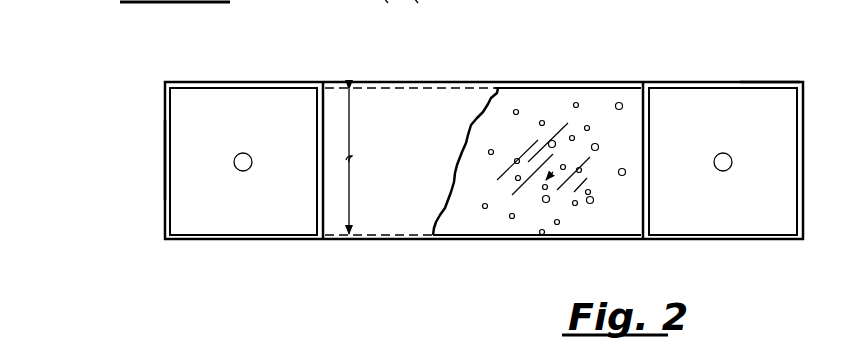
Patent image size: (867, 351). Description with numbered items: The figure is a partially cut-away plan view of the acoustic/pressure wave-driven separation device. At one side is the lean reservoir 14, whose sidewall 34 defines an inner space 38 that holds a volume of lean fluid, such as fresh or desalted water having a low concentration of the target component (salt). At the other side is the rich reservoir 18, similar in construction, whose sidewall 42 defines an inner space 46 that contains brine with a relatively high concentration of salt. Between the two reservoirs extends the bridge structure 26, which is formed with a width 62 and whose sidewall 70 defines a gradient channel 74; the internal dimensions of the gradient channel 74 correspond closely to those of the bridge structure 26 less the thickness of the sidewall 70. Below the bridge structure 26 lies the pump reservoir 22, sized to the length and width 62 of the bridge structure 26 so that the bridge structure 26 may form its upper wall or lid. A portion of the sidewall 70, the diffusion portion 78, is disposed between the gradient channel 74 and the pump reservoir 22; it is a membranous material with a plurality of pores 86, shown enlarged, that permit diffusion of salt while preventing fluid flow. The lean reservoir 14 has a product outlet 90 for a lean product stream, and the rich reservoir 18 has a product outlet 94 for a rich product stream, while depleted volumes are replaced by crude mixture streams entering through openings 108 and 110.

The lean reservoir 14 is at (805, 178).
The rich reservoir 18 is at (232, 243).
The pump reservoir 22 is at (573, 5).
The bridge structure 26 is at (385, 96).
The sidewall 34 is at (805, 126).
The inner space 38 is at (697, 98).
The sidewall 42 is at (193, 84).
The inner space 46 is at (266, 100).
The width 62 is at (351, 157).
The sidewall 70 is at (447, 240).
The gradient channel 74 is at (617, 232).
The diffusion portion 78 is at (530, 100).
The pores 86 is at (558, 221).
The product outlet 90 is at (731, 151).
The product outlet 94 is at (250, 154).
The opening 108 is at (772, 84).
The opening 110 is at (166, 162).